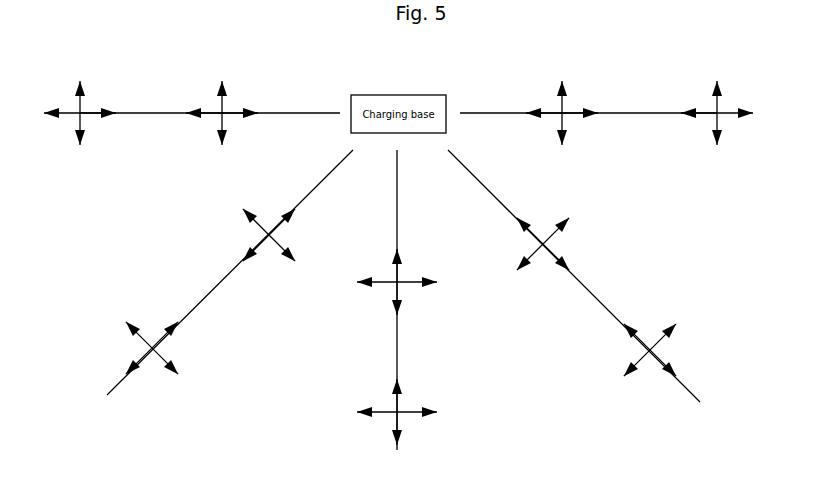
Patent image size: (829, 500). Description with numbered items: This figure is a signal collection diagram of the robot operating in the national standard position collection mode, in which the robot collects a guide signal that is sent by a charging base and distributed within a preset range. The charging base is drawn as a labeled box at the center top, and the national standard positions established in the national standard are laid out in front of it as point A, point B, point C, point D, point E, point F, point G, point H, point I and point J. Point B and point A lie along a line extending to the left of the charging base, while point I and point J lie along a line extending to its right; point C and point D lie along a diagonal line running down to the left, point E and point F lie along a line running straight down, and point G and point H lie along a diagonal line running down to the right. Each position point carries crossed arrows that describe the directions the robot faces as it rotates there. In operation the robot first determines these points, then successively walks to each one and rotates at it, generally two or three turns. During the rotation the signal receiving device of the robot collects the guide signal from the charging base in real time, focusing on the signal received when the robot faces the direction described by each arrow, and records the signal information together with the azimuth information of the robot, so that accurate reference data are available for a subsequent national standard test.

The point A is at (230, 113).
The point B is at (89, 113).
The point C is at (269, 235).
The point D is at (153, 348).
The point E is at (400, 276).
The point F is at (400, 407).
The point G is at (543, 244).
The point H is at (650, 350).
The point I is at (562, 124).
The point J is at (717, 123).